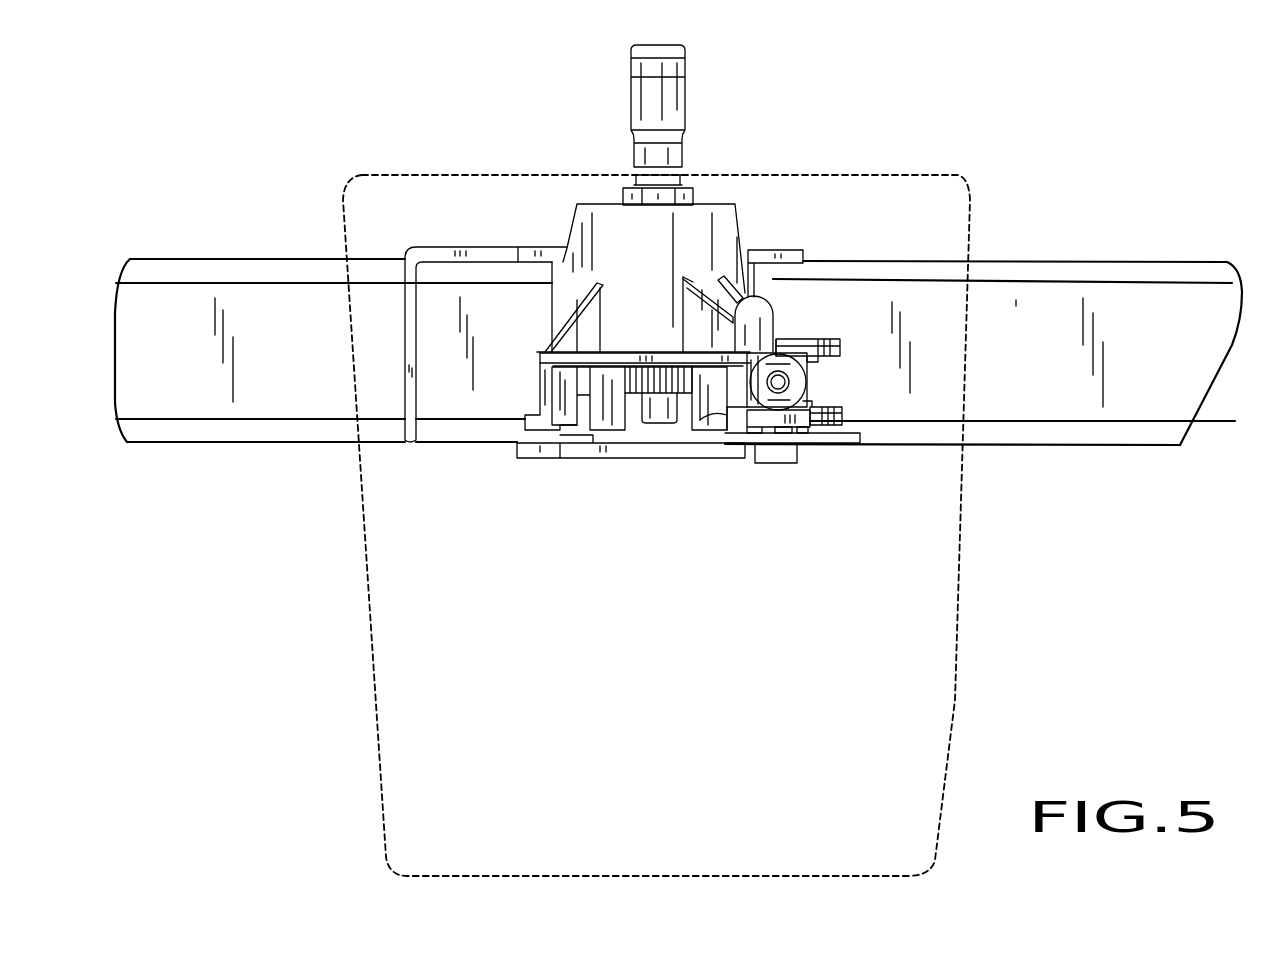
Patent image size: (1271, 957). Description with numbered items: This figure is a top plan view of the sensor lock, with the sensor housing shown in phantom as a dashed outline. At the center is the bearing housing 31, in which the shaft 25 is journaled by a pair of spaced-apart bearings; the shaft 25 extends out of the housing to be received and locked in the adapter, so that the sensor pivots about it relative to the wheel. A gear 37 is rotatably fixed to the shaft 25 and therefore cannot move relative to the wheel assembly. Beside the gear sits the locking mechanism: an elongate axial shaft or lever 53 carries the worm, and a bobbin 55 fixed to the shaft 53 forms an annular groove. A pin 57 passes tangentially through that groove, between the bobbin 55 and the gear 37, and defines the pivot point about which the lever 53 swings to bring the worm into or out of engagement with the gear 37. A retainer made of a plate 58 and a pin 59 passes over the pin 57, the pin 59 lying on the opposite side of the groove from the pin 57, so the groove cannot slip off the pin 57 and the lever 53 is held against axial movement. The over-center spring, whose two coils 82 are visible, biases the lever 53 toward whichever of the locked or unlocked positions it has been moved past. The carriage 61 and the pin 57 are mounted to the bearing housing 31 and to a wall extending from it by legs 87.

The shaft 25 is at (685, 113).
The bearing housing 31 is at (690, 244).
The gear 37 is at (647, 422).
The shaft (lever) 53 is at (790, 380).
The bobbin 55 is at (836, 338).
The pin 57 is at (760, 430).
The plate 58 is at (778, 415).
The pin 59 is at (801, 428).
The carriage 61 is at (732, 411).
The coils 82 is at (843, 348).
The legs 87 is at (705, 318).